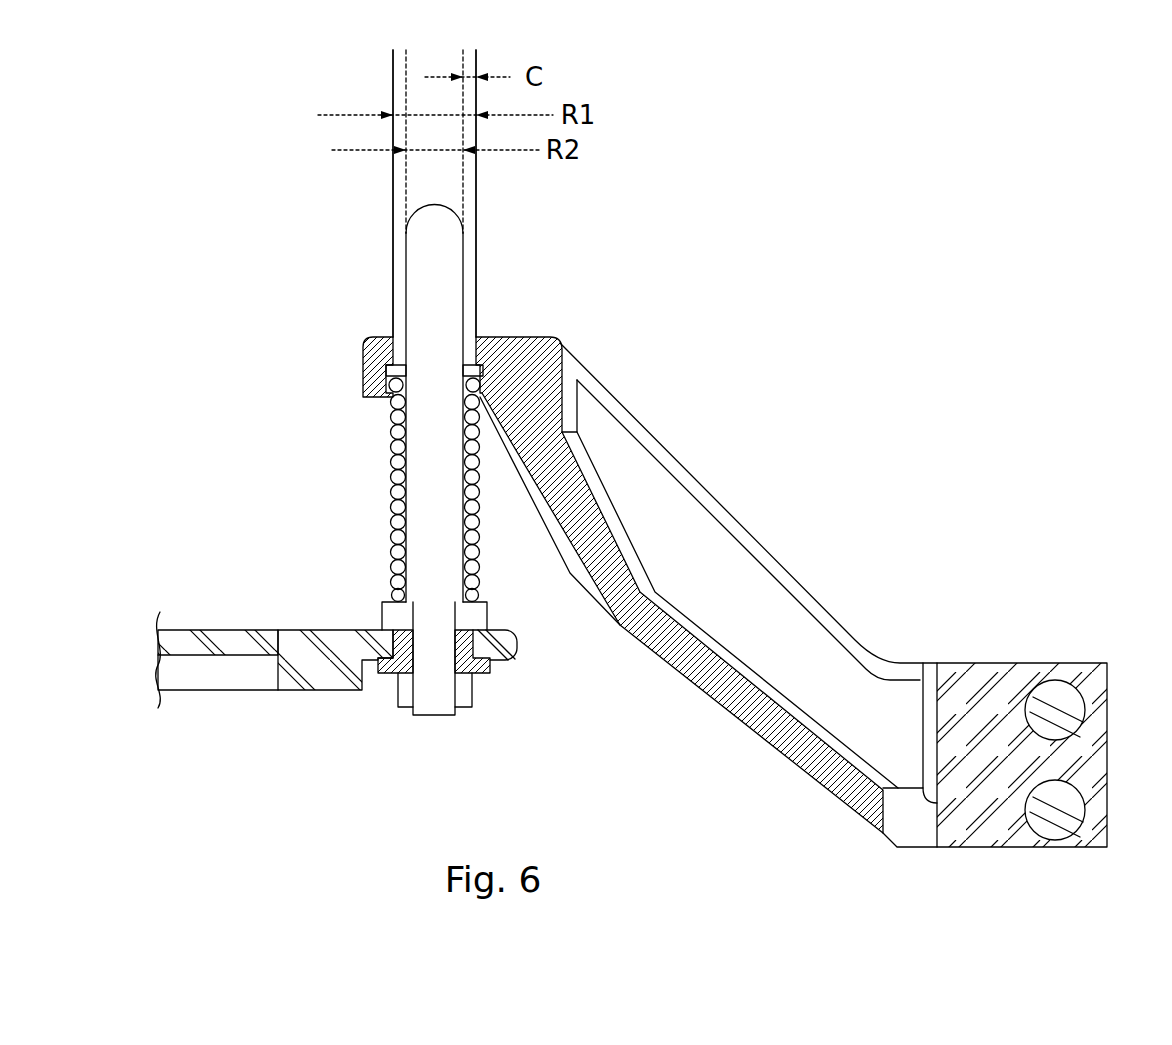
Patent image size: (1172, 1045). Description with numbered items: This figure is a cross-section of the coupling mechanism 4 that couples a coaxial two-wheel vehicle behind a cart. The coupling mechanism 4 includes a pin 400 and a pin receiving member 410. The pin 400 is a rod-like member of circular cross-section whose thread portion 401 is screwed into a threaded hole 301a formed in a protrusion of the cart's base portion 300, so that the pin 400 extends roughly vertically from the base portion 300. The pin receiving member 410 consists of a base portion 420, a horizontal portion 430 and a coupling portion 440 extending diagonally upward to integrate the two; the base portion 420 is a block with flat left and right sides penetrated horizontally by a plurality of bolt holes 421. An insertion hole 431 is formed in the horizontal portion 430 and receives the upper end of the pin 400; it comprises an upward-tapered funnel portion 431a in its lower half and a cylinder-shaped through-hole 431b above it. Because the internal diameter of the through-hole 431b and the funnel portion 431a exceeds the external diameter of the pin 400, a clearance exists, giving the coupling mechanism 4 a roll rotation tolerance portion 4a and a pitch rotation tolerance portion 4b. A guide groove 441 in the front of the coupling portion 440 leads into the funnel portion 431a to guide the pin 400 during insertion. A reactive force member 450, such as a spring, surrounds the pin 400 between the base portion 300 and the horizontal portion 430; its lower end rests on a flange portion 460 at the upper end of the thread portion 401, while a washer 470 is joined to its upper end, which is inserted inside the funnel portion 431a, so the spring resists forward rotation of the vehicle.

The coupling mechanism 4 is at (690, 355).
The roll rotation tolerance portion 4a is at (471, 337).
The pitch rotation tolerance portion 4b is at (471, 337).
The base portion 300 is at (222, 683).
The threaded hole 301a is at (443, 658).
The pin 400 is at (427, 287).
The thread portion 401 is at (412, 686).
The pin receiving member 410 is at (780, 528).
The base portion 420 is at (993, 666).
The bolt holes 421 is at (1068, 710).
The horizontal portion 430 is at (534, 358).
The insertion hole 431 is at (215, 312).
The funnel portion 431a is at (388, 390).
The through-hole 431b is at (398, 336).
The coupling portion 440 is at (710, 535).
The guide groove 441 is at (556, 525).
The reactive force member 450 is at (390, 492).
The flange portion 460 is at (385, 616).
The washer 470 is at (392, 392).